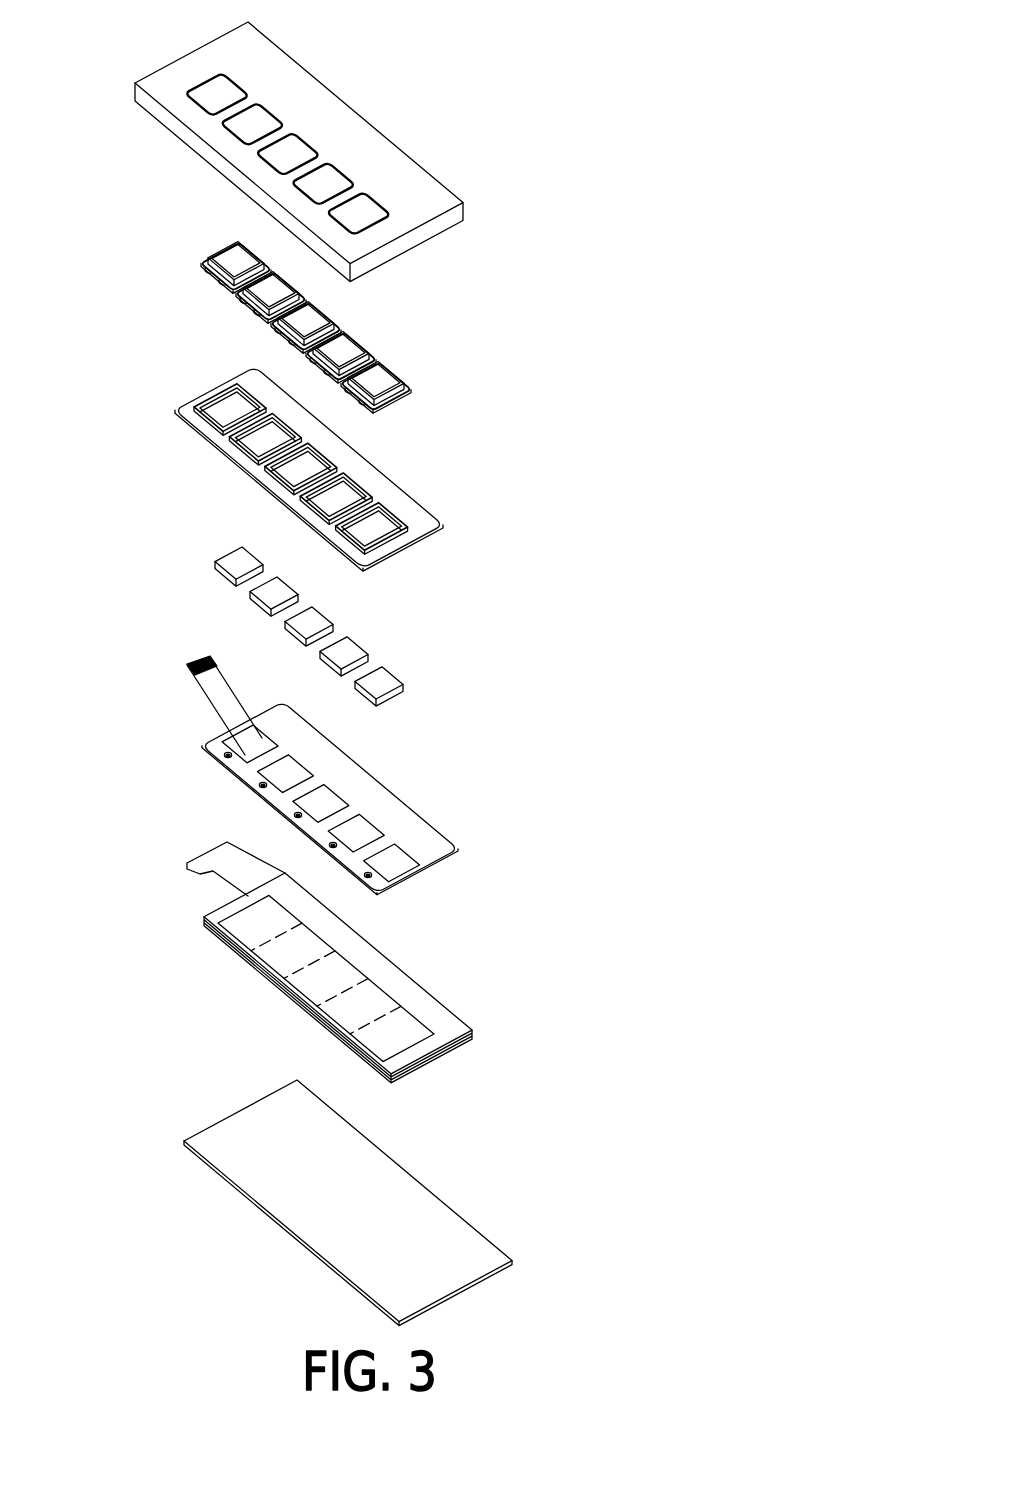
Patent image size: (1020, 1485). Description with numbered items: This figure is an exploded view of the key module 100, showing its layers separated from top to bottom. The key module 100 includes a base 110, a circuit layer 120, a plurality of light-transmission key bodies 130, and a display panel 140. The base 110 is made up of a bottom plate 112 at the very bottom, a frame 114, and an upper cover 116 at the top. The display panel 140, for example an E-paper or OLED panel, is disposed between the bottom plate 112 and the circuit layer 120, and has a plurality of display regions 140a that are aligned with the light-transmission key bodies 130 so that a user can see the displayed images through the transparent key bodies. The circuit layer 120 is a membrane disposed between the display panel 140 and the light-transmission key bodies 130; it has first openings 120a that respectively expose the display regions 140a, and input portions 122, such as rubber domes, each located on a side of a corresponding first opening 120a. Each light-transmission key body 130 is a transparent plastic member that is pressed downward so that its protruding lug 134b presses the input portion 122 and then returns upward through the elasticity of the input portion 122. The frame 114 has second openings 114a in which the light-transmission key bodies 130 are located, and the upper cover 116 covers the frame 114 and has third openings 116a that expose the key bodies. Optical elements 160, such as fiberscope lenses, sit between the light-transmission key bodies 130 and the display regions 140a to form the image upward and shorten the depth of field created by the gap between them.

The key module 100 is at (762, 1327).
The base 110 is at (434, 669).
The bottom plate 112 is at (472, 1247).
The frame 114 is at (431, 503).
The second opening 114a is at (225, 417).
The upper cover 116 is at (406, 325).
The third opening 116a is at (215, 97).
The circuit layer 120 is at (305, 784).
The first opening 120a is at (243, 750).
The input portion 122 is at (257, 787).
The light-transmission key body 130 is at (282, 348).
The protruding lug 134b is at (247, 313).
The display panel 140 is at (306, 970).
The display region 140a is at (257, 925).
The optical element 160 is at (387, 683).